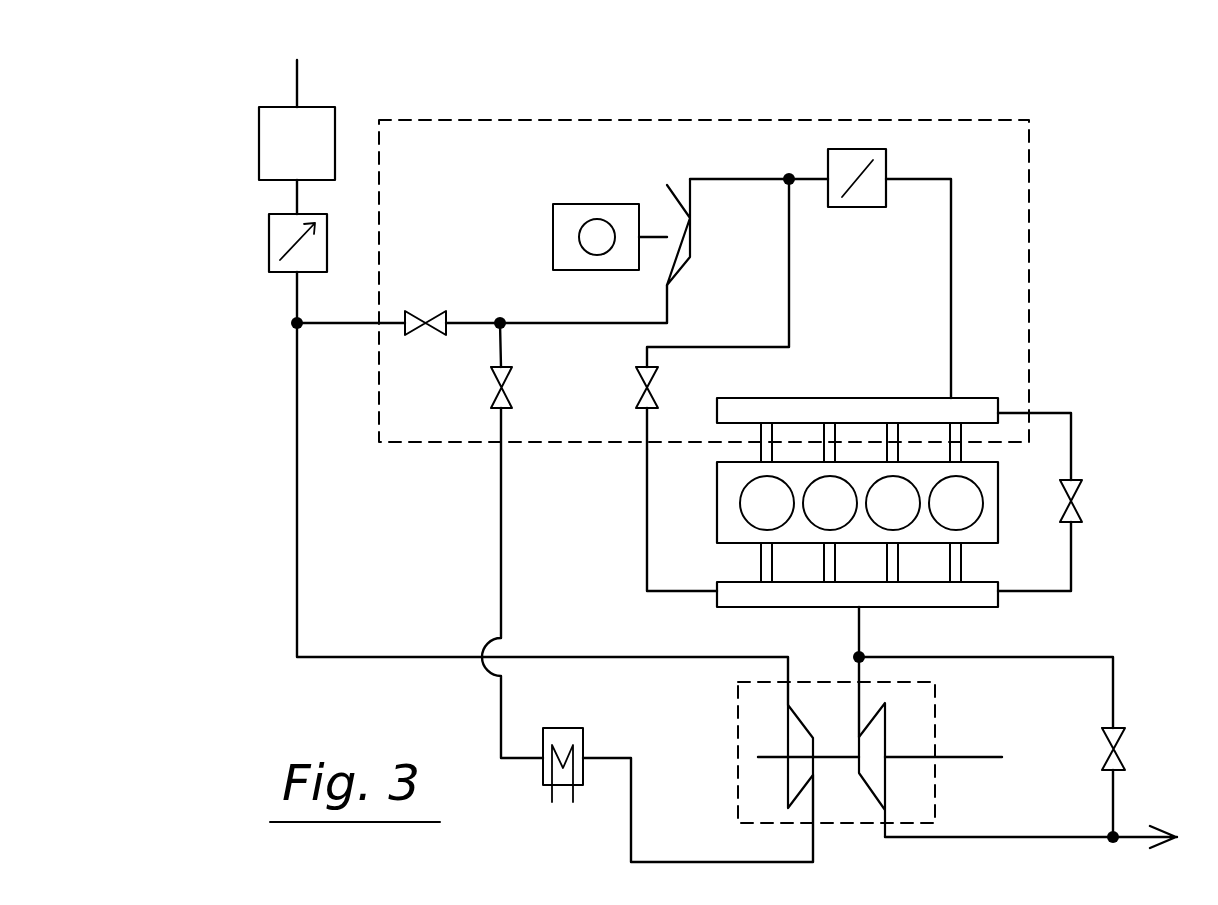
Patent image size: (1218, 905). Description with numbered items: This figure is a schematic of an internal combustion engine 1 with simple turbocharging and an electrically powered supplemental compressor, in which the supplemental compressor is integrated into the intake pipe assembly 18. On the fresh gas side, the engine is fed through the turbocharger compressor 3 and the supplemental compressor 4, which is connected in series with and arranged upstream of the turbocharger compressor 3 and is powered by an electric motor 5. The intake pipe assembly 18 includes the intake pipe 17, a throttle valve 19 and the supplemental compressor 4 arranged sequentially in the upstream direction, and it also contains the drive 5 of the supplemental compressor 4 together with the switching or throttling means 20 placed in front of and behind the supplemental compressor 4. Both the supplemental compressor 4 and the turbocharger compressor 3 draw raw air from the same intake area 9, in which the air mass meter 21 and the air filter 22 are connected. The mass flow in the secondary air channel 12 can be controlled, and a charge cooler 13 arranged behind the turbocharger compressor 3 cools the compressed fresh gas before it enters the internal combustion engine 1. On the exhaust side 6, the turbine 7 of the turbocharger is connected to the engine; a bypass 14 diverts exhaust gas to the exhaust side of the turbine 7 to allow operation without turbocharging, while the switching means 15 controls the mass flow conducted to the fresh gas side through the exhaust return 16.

The internal combustion engine 1 is at (993, 480).
The turbocharger compressor 3 is at (800, 737).
The supplemental compressor 4 is at (674, 203).
The electric motor 5 is at (558, 207).
The exhaust side 6 is at (920, 597).
The turbine 7 is at (877, 743).
The intake area 9 is at (297, 80).
The secondary air channel 12 is at (675, 594).
The charge cooler 13 is at (580, 735).
The bypass 14 is at (1065, 657).
The switching means 15 is at (1120, 757).
The exhaust return 16 is at (1072, 568).
The intake pipe 17 is at (847, 397).
The intake pipe assembly 18 is at (1032, 190).
The throttle valve 19 is at (848, 208).
The switching or throttling means 20 is at (440, 310).
The air mass meter 21 is at (280, 235).
The air filter 22 is at (265, 150).